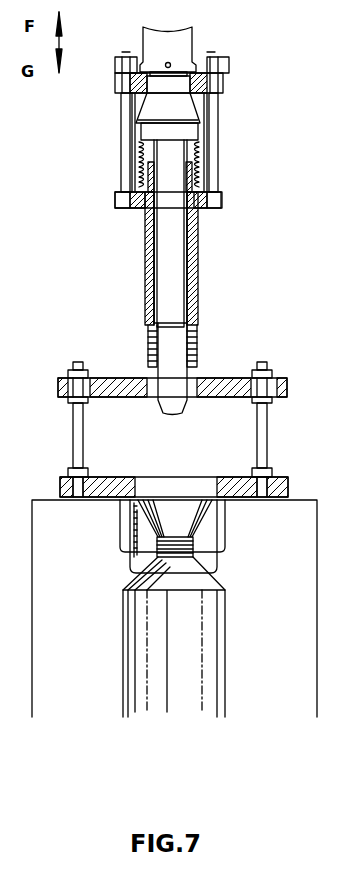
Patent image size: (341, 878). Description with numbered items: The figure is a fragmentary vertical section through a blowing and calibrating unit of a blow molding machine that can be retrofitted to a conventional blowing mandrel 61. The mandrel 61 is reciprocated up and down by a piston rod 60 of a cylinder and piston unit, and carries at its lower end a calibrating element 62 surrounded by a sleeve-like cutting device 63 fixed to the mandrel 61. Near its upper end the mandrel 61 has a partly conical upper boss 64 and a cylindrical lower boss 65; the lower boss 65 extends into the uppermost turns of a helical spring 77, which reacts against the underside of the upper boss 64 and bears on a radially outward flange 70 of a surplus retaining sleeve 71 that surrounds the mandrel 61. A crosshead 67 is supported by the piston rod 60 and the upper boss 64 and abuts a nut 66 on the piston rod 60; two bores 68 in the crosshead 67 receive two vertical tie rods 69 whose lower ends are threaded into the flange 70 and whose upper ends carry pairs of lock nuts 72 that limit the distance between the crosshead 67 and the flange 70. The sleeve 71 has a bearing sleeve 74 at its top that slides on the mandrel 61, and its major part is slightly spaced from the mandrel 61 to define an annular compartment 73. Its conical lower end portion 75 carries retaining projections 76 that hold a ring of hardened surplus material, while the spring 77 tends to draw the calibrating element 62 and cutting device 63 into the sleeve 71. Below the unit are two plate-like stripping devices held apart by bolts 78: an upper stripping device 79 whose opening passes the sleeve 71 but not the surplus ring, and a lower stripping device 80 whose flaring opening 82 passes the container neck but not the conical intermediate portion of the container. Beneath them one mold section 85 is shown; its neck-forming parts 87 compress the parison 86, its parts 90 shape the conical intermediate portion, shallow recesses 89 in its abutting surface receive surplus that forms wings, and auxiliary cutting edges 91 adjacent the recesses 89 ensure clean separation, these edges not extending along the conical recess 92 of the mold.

The piston rod 60 is at (178, 38).
The nut 66 is at (157, 63).
The bores 68 is at (221, 83).
The lock nuts 72 is at (222, 63).
The crosshead 67 is at (197, 95).
The upper boss 64 is at (185, 112).
The lower boss 65 is at (153, 132).
The tie rods 69 is at (128, 153).
The bearing sleeve 74 is at (145, 174).
The helical spring 77 is at (196, 172).
The flange 70 is at (208, 208).
The surplus retaining sleeve 71 is at (198, 296).
The annular compartment 73 is at (195, 248).
The blowing mandrel 61 is at (172, 270).
The cutting device 63 is at (198, 335).
The retaining projections 76 is at (148, 357).
The lower end portion of sleeve 75 is at (150, 345).
The calibrating element 62 is at (178, 378).
The upper stripping device 79 is at (285, 380).
The bolts 78 is at (72, 432).
The lower stripping device 80 is at (285, 478).
The mold section 85 is at (287, 680).
The opening 82 is at (197, 492).
The conical recess 92 is at (140, 510).
The recesses 89 is at (210, 505).
The auxiliary cutting edges 91 is at (155, 545).
The neck-forming parts 87 is at (195, 548).
The intermediate-portion-forming parts 90 is at (215, 584).
The parison 86 is at (202, 632).